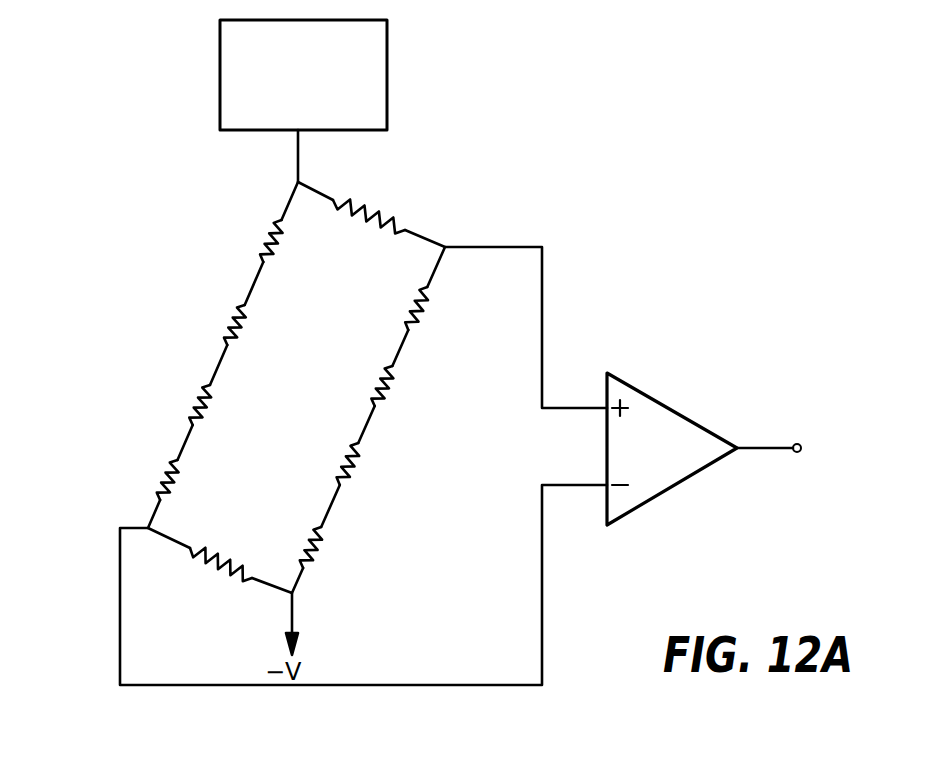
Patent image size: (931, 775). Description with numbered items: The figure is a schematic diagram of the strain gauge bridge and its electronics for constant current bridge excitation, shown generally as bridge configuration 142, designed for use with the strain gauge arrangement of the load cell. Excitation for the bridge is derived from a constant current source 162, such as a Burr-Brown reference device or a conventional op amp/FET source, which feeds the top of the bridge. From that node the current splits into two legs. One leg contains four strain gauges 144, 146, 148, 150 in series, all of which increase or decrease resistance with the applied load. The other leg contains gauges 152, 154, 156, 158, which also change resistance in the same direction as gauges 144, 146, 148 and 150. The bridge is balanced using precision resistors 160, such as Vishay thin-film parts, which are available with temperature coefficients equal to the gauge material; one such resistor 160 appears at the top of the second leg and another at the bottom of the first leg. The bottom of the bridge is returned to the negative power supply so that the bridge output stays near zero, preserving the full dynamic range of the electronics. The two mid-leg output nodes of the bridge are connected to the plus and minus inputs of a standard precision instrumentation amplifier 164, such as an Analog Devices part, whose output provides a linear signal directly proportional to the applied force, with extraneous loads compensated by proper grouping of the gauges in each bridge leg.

The bridge configuration 142 is at (592, 245).
The strain gauge 144 is at (270, 240).
The strain gauge 146 is at (234, 327).
The strain gauge 148 is at (200, 406).
The strain gauge 150 is at (168, 484).
The gauge 152 is at (422, 305).
The gauge 154 is at (386, 384).
The gauge 156 is at (352, 468).
The gauge 158 is at (316, 560).
The precision resistors 160 is at (378, 207).
The constant current source 162 is at (378, 105).
The precision instrumentation amplifier 164 is at (652, 415).